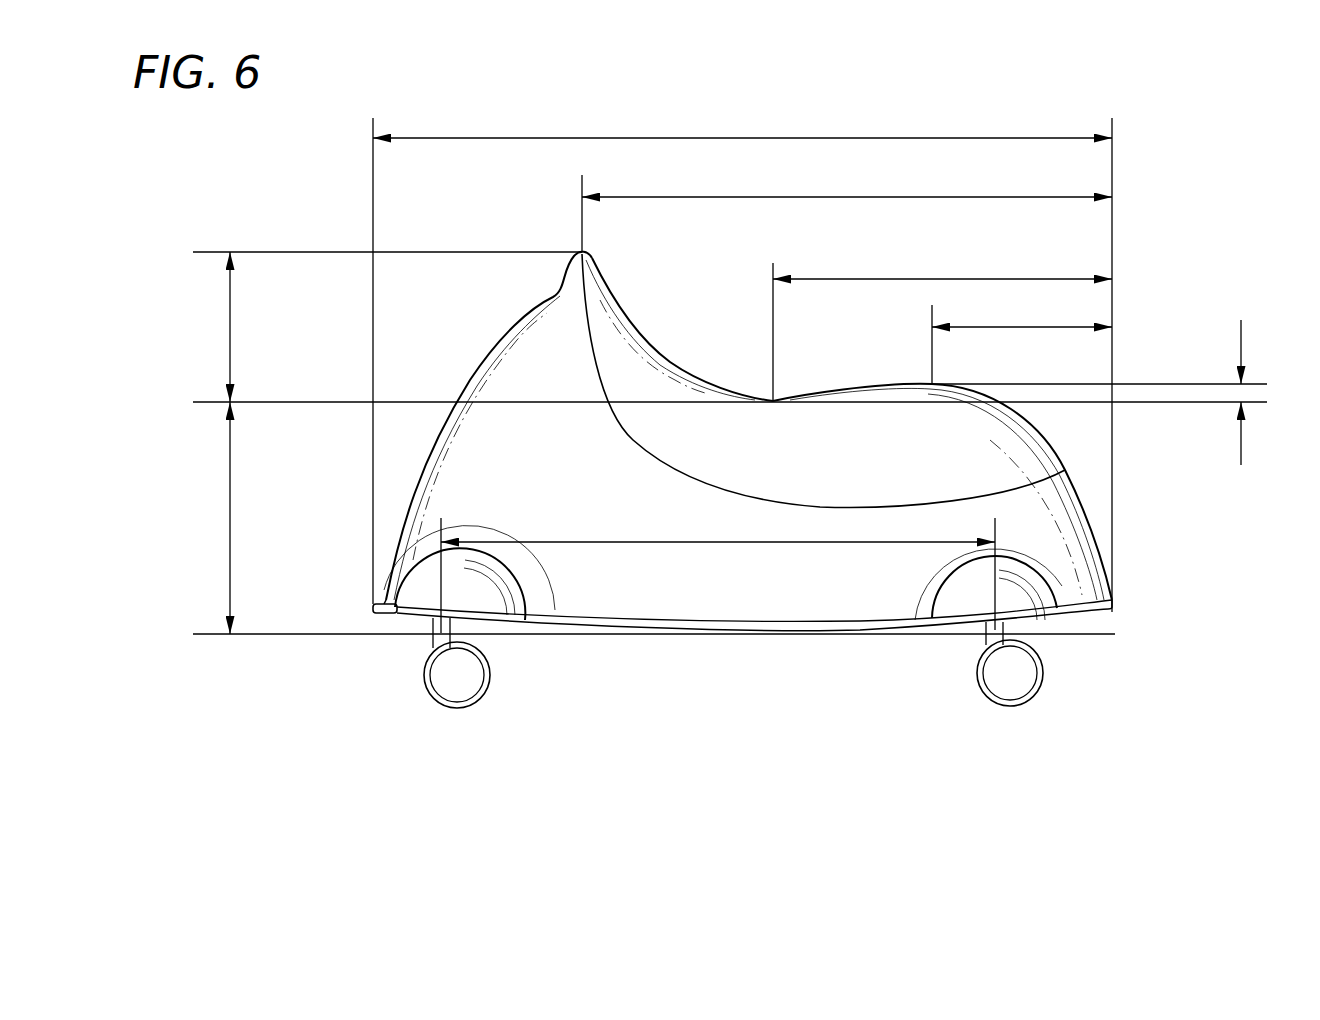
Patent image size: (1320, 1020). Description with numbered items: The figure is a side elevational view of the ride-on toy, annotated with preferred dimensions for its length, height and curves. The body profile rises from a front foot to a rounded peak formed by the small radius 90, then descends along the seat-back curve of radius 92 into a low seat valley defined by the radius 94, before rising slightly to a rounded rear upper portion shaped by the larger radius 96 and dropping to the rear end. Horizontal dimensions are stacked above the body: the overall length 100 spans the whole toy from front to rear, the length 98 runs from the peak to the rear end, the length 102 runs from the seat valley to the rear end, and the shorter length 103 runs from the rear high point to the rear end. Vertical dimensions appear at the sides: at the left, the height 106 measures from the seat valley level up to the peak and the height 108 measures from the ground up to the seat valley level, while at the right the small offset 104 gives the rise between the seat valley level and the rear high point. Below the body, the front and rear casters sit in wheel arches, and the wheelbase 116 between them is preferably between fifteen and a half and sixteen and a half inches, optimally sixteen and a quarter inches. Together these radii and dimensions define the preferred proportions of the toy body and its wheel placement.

The radius at top of seat back 90 is at (590, 253).
The seat back radius 92 is at (655, 353).
The seat radius 94 is at (777, 399).
The rear body radius 96 is at (927, 387).
The peak-to-rear length dimension 98 is at (848, 196).
The overall length dimension 100 is at (742, 138).
The valley-to-rear length dimension 102 is at (942, 278).
The rear high point-to-rear length dimension 103 is at (1040, 326).
The rear rise height dimension 104 is at (1241, 335).
The upper height dimension 106 is at (230, 313).
The lower height dimension 108 is at (230, 520).
The wheelbase 116 is at (716, 543).